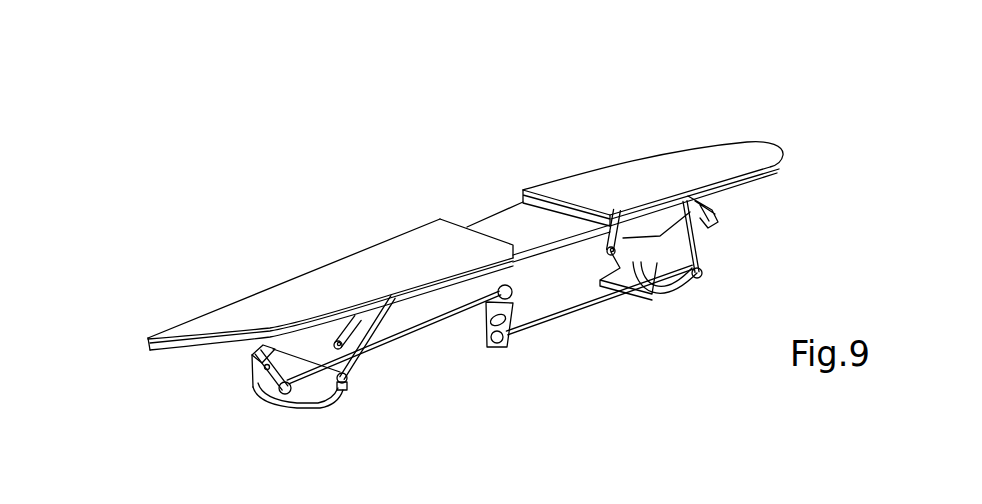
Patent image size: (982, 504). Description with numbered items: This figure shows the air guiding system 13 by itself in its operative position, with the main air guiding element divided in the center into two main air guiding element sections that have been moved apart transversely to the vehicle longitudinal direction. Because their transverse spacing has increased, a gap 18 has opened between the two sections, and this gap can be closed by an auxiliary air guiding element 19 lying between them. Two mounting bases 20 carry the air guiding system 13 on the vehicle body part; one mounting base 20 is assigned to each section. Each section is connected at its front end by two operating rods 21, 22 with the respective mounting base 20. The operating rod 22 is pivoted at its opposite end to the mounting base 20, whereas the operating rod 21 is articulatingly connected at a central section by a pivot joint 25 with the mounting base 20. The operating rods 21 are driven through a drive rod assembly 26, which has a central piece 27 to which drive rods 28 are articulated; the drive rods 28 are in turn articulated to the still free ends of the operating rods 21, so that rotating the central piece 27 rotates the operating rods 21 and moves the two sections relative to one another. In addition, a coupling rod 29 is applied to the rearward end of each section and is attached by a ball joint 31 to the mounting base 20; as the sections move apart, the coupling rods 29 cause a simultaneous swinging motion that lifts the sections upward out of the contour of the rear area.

The air guiding system 13 is at (163, 281).
The gap 18 is at (462, 206).
The auxiliary air guiding element 19 is at (515, 223).
The mounting base 20 is at (297, 410).
The operating rod 21 is at (250, 360).
The operating rod 22 is at (367, 307).
The joint 25 is at (258, 393).
The drive rod assembly 26 is at (471, 322).
The central piece 27 is at (507, 310).
The drive rod 28 is at (388, 345).
The coupling rod 29 is at (397, 307).
The joint 31 is at (347, 391).